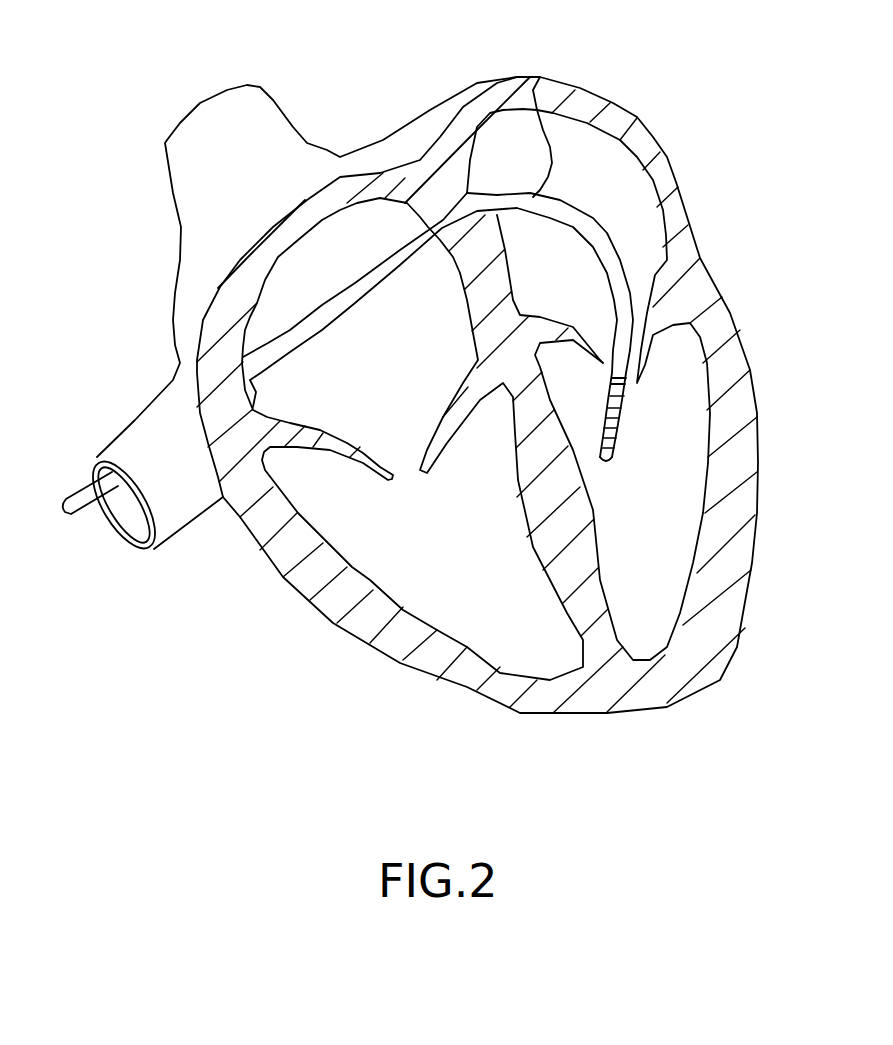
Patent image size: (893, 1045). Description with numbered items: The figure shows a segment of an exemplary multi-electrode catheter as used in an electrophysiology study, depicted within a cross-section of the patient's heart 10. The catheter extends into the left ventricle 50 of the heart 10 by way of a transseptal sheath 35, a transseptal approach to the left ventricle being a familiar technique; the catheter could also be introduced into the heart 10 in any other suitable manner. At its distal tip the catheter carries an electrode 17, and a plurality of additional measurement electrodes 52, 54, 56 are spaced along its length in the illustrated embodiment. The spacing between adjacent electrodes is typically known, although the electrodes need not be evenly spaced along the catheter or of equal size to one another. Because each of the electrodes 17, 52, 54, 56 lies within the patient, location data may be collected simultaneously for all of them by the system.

The heart 10 is at (410, 363).
The transseptal sheath 35 is at (550, 102).
The left ventricle 50 is at (492, 325).
The measurement electrode 52 is at (640, 450).
The measurement electrode 54 is at (644, 425).
The measurement electrode 56 is at (643, 402).
The electrode 17 is at (621, 482).